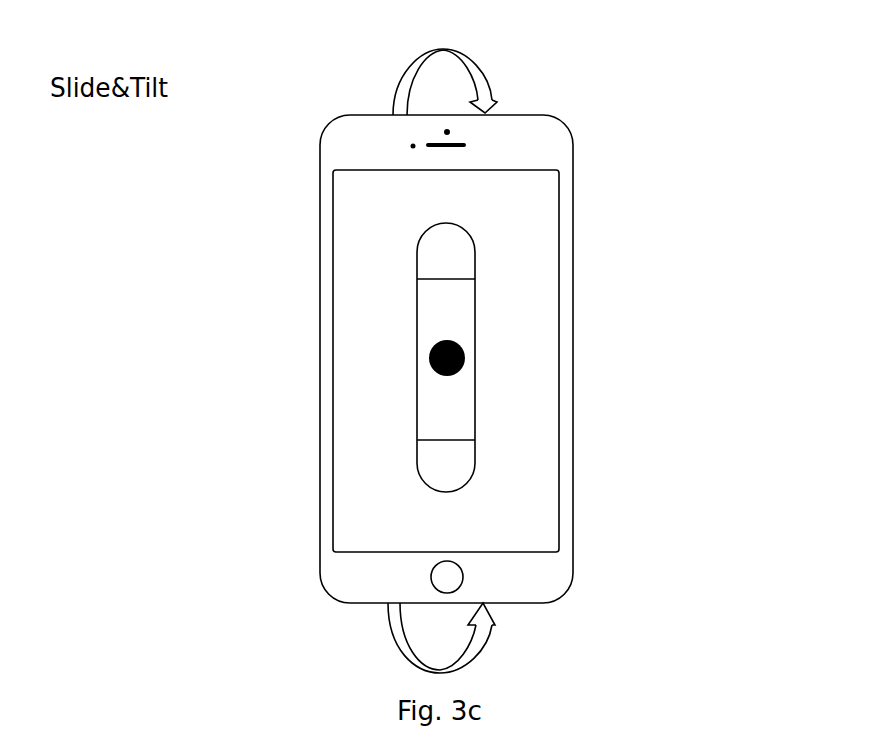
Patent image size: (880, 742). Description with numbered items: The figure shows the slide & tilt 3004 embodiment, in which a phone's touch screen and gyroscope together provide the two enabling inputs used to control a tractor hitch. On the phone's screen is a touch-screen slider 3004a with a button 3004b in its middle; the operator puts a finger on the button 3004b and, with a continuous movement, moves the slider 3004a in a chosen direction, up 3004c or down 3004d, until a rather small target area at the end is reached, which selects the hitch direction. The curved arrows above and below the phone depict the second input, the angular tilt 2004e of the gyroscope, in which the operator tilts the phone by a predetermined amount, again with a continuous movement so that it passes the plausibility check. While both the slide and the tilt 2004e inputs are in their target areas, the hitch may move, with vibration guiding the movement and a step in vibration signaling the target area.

The slide & tilt 3004 is at (573, 560).
The touch-screen slider 3004a is at (475, 309).
The button 3004b is at (465, 358).
The up direction 3004c is at (523, 266).
The down direction 3004d is at (553, 458).
The tilt phone gesture 2004e is at (625, 80).